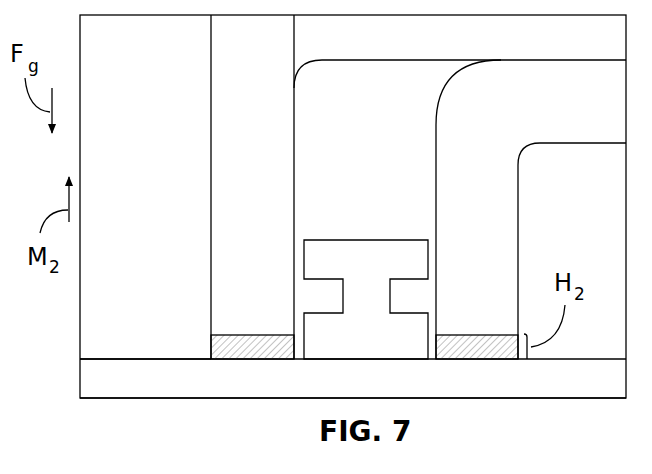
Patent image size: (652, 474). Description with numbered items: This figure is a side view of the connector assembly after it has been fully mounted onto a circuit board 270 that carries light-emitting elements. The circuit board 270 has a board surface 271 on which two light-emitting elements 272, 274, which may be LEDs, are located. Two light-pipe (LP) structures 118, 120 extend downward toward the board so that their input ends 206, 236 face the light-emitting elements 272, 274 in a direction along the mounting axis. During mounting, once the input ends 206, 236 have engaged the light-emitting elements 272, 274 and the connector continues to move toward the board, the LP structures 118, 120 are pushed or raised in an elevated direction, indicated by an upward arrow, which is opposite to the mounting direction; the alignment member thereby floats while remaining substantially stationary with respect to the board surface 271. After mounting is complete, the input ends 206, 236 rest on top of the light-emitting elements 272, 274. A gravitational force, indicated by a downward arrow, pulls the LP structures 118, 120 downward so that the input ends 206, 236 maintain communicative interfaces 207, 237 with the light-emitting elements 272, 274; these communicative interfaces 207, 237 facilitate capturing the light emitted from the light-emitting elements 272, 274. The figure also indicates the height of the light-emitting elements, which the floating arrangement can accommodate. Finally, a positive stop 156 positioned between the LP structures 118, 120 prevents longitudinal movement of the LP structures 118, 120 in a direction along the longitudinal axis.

The LP structure 118 is at (185, 95).
The LP structure 120 is at (422, 182).
The positive stop 156 is at (358, 277).
The input end 206 is at (237, 333).
The communicative interface 207 is at (278, 338).
The input end 236 is at (465, 333).
The communicative interface 237 is at (504, 338).
The circuit board 270 is at (138, 357).
The board surface 271 is at (170, 352).
The light-emitting element 272 is at (250, 362).
The light-emitting element 274 is at (482, 349).